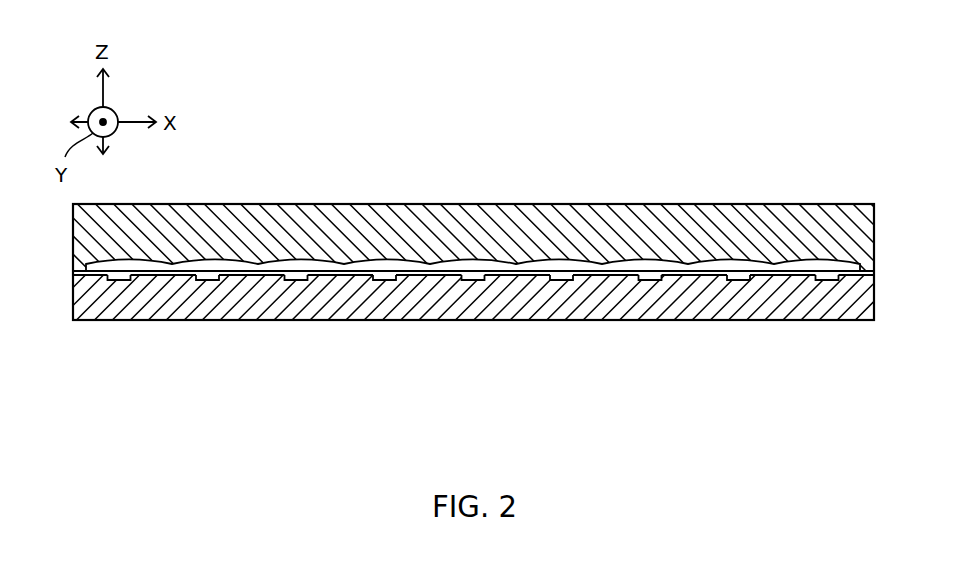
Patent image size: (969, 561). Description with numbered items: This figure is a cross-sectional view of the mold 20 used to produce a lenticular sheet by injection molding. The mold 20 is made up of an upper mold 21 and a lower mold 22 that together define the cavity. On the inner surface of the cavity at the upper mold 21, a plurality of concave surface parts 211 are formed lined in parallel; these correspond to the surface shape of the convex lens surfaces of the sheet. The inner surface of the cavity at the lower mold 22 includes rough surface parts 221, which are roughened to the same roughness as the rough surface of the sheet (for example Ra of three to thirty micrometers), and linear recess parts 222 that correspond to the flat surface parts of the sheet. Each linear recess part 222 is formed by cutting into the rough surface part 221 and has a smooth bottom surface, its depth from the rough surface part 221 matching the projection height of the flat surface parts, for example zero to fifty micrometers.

The mold 20 is at (816, 133).
The upper mold 21 is at (480, 169).
The concave surface parts 211 is at (574, 262).
The lower mold 22 is at (480, 358).
The rough surface parts 221 is at (347, 277).
The linear recess parts 222 is at (736, 276).